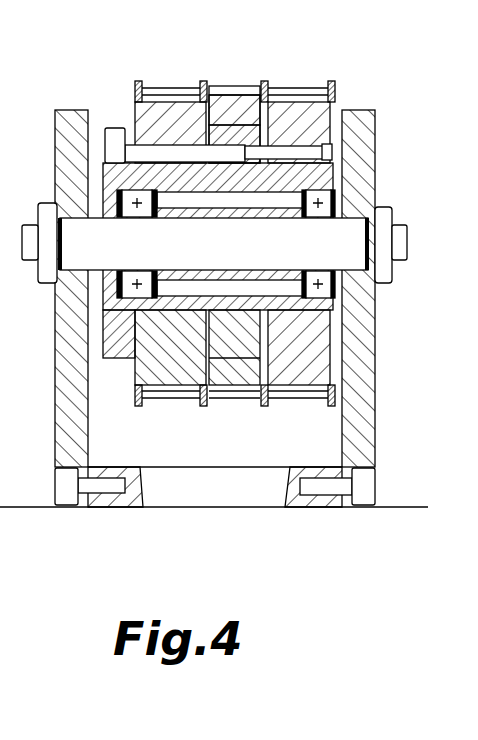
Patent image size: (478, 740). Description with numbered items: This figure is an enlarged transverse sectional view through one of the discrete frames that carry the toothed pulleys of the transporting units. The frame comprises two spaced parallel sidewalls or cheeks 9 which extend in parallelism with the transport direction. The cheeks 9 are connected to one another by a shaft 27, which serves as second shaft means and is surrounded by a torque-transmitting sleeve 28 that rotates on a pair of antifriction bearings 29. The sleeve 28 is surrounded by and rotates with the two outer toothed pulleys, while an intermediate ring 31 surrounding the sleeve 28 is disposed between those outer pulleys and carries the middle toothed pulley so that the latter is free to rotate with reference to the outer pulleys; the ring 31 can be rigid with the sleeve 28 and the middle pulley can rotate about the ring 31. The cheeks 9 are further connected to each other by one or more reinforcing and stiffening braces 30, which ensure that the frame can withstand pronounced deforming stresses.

The cheek 9 is at (68, 157).
The torque-transmitting sleeve 28 is at (118, 128).
The intermediate ring 31 is at (220, 133).
The shaft 27 is at (352, 233).
The bearings 29 is at (308, 220).
The brace 30 is at (215, 485).